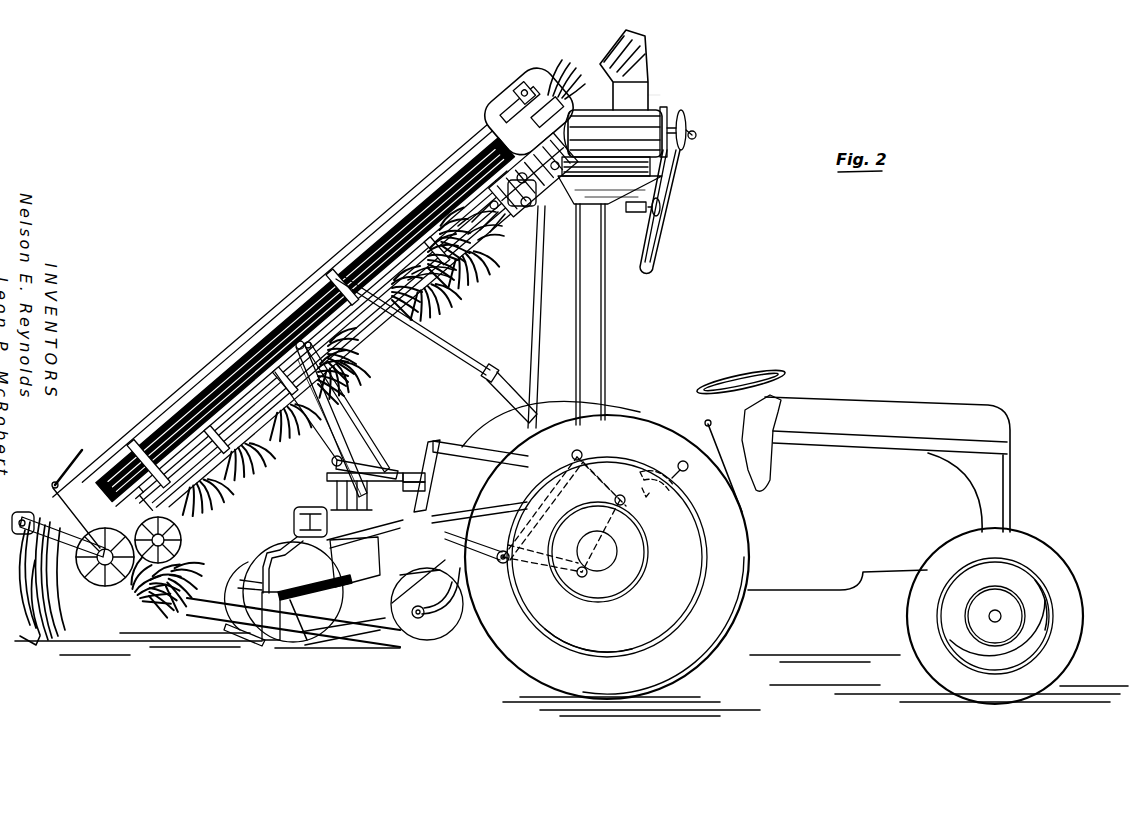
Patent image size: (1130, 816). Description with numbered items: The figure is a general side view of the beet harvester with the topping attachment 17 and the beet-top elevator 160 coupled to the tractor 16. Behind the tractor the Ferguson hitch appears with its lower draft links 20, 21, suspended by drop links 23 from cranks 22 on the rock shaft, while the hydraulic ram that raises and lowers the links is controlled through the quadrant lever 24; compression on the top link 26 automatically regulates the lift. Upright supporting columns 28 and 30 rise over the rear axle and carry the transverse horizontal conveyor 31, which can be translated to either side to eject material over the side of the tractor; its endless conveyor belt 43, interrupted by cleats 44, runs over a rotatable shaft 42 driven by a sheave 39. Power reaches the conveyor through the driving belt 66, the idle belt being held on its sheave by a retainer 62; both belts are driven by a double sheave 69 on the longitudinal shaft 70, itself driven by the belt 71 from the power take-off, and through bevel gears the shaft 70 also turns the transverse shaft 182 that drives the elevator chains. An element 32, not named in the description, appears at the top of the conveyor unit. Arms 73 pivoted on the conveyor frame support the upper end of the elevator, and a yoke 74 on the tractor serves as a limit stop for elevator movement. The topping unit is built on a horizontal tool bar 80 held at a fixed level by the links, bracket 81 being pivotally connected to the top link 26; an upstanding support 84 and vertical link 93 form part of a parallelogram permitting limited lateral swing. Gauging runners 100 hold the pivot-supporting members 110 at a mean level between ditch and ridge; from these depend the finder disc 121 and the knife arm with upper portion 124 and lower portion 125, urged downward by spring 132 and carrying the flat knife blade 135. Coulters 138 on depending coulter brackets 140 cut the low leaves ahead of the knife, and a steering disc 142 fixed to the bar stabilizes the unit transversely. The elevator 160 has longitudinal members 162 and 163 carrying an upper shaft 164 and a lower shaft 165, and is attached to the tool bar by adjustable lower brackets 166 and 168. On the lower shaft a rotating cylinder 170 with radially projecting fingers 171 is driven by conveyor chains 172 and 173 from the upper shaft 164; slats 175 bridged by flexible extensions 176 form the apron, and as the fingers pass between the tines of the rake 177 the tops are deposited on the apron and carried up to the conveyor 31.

The tractor 16 is at (909, 397).
The topping attachment 17 is at (280, 541).
The draft link 20 is at (460, 534).
The draft link 21 is at (466, 519).
The crank 22 is at (590, 472).
The drop link 23 is at (538, 502).
The quadrant lever 24 is at (663, 468).
The top link 26 is at (458, 446).
The upright supporting column 28 is at (584, 326).
The upright supporting column 30 is at (606, 350).
The transverse horizontal conveyor 31 is at (668, 90).
The discharge spout 32 is at (644, 38).
The sheave 39 is at (678, 118).
The rotatable shaft 42 is at (694, 139).
The endless conveyor belt 43 is at (590, 116).
The cleats 44 is at (610, 180).
The retainer 62 is at (696, 133).
The driving belt 66 is at (680, 186).
The double sheave 69 is at (661, 210).
The longitudinal shaft 70 is at (630, 214).
The belt 71 is at (538, 296).
The arms 73 is at (489, 229).
The yoke 74 is at (476, 368).
The horizontal tool bar 80 is at (424, 495).
The bracket 81 is at (426, 452).
The upstanding support 84 is at (426, 492).
The vertical link 93 is at (355, 553).
The gauging runner 100 is at (322, 644).
The pivot-supporting member 110 is at (332, 462).
The finder disc 121 is at (240, 582).
The upper portion of knife arm 124 is at (328, 490).
The lower portion of knife arm 125 is at (266, 554).
The spring 132 is at (315, 583).
The knife blade 135 is at (236, 640).
The coulter 138 is at (468, 612).
The coulter bracket 140 is at (427, 600).
The steering disc 142 is at (336, 602).
The elevator 160 is at (341, 231).
The longitudinal member 162 is at (430, 292).
The longitudinal member 163 is at (465, 284).
The upper shaft 164 is at (550, 82).
The lower shaft 165 is at (83, 545).
The lower bracket 166 is at (352, 406).
The lower bracket 168 is at (372, 420).
The rotating cylinder 170 is at (100, 586).
The fingers 171 is at (260, 600).
The conveyor chain 172 is at (362, 369).
The conveyor chain 173 is at (365, 350).
The slats 175 is at (467, 236).
The flexible extensions 176 is at (472, 262).
The rake 177 is at (50, 640).
The transverse shaft 182 is at (532, 212).